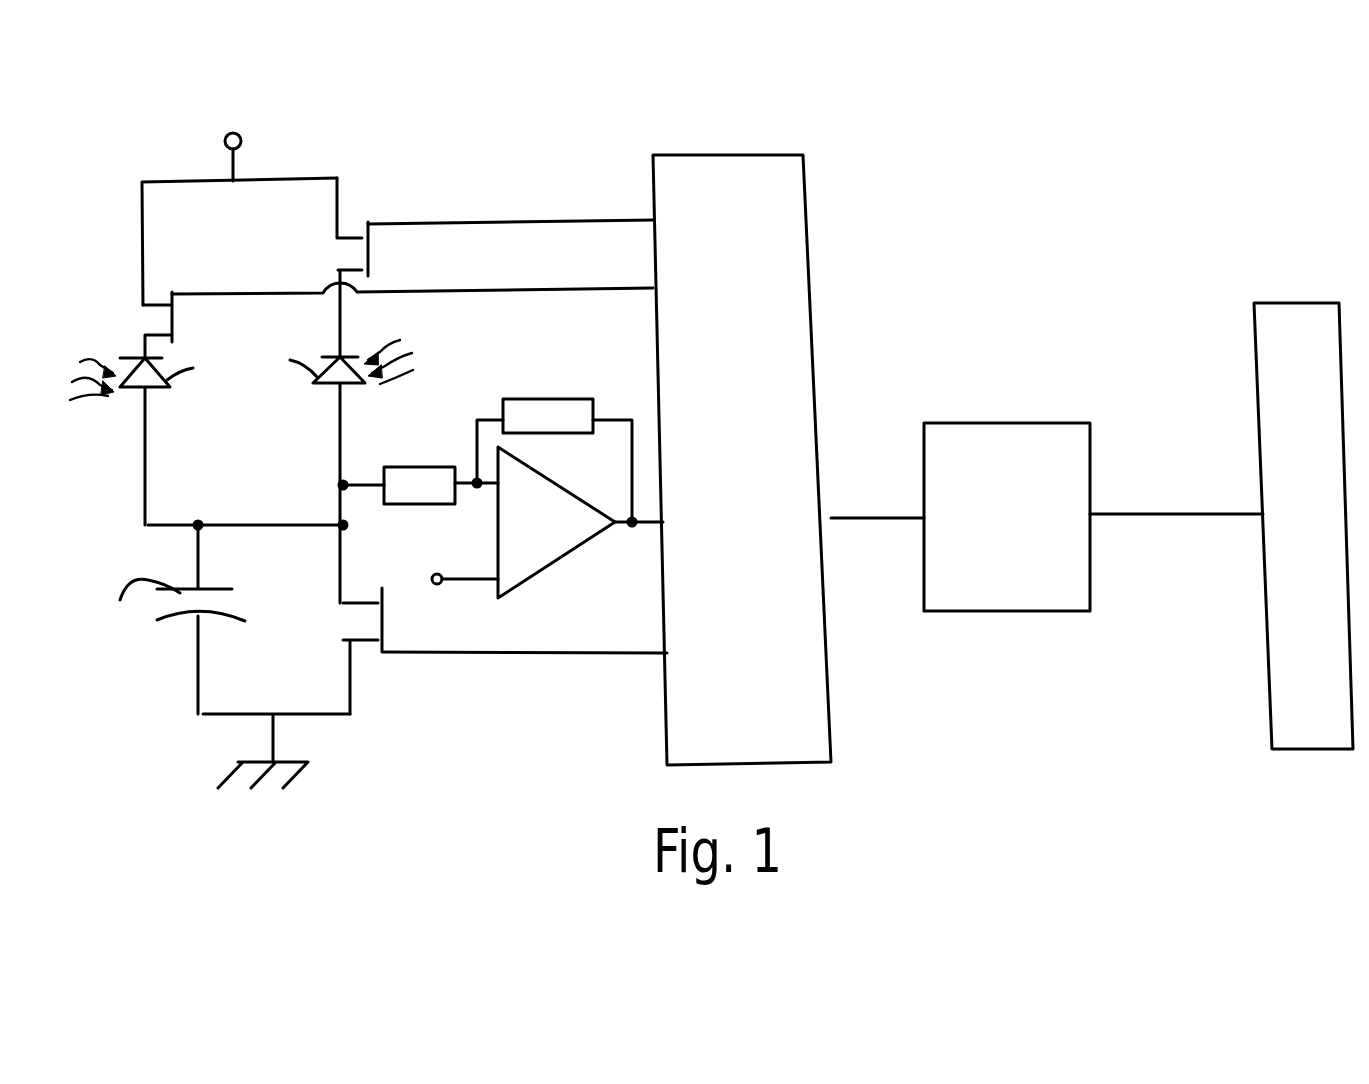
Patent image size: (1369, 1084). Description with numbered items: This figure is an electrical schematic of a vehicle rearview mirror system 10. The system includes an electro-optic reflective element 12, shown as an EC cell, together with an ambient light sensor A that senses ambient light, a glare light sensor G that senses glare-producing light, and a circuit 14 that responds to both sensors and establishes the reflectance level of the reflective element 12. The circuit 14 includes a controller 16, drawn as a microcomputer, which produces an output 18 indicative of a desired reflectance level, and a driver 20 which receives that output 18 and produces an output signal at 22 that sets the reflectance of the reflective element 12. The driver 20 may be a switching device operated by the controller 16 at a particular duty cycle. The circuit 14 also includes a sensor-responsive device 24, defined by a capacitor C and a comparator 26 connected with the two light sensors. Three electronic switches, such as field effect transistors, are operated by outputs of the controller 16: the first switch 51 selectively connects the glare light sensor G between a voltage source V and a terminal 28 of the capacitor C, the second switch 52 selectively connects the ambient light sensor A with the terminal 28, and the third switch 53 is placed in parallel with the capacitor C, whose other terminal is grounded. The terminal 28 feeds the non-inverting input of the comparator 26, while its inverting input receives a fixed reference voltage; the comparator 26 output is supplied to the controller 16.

The vehicle rearview mirror system 10 is at (1000, 193).
The electro-optic reflective element 12 is at (1284, 298).
The circuit 14 is at (542, 370).
The controller 16 is at (732, 155).
The output 18 is at (856, 516).
The driver 20 is at (1020, 423).
The output signal 22 is at (1126, 512).
The sensor-responsive device 24 is at (330, 565).
The comparator 26 is at (552, 562).
The terminal 28 is at (185, 522).
The switch S1 51 is at (145, 300).
The switch S2 52 is at (352, 237).
The switch S3 53 is at (362, 642).